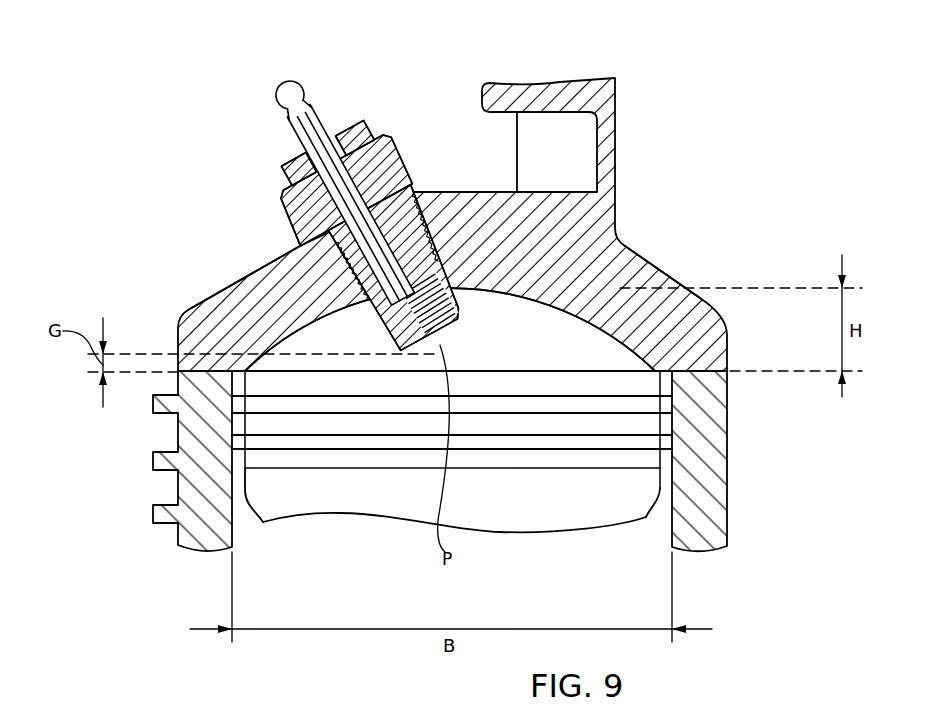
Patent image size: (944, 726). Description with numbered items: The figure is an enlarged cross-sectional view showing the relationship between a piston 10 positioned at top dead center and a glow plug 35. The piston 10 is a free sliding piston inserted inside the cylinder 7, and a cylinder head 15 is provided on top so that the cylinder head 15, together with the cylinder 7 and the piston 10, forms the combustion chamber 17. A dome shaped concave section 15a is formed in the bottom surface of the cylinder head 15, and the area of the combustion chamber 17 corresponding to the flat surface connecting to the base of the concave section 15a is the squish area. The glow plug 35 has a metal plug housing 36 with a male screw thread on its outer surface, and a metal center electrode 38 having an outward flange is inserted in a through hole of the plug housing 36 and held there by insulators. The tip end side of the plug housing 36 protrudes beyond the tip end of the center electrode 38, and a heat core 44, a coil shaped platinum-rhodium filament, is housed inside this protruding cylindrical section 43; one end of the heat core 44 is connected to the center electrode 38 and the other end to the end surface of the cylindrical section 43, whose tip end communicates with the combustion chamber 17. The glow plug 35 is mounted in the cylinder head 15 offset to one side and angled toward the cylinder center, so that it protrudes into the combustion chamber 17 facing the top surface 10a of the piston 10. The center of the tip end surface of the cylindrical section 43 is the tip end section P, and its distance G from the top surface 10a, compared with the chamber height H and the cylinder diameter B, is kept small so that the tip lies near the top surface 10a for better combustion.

The cylinder 7 is at (752, 514).
The piston 10 is at (484, 461).
The top surface of the piston 10a is at (700, 374).
The cylinder head 15 is at (497, 224).
The dome shaped concave section 15a is at (603, 300).
The combustion chamber 17 is at (500, 355).
The glow plug 35 is at (343, 198).
The plug housing 36 is at (339, 179).
The center electrode 38 is at (292, 98).
The cylindrical section 43 is at (403, 269).
The heat core 44 is at (298, 278).